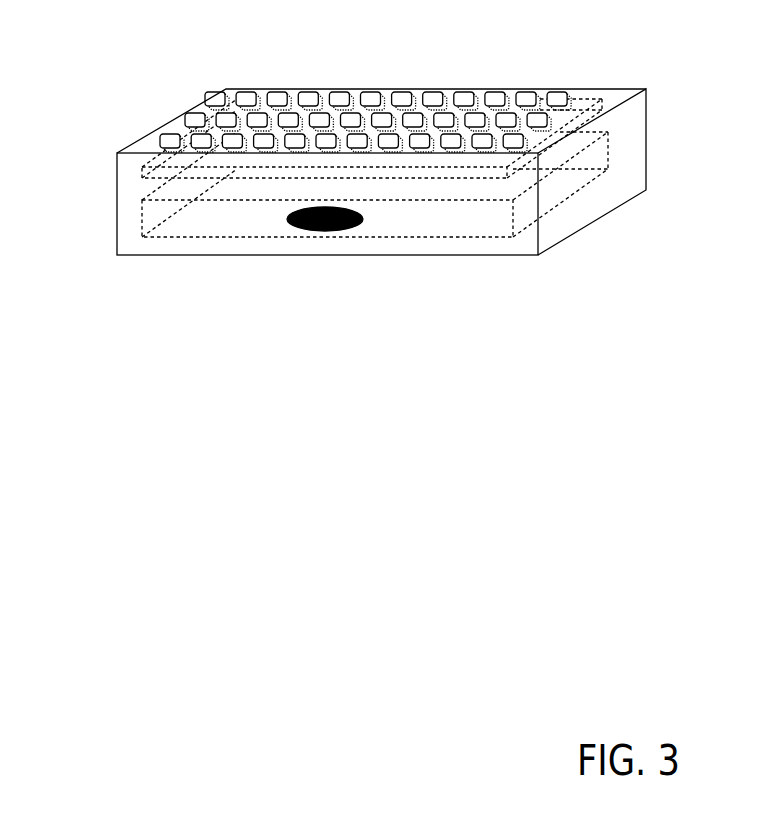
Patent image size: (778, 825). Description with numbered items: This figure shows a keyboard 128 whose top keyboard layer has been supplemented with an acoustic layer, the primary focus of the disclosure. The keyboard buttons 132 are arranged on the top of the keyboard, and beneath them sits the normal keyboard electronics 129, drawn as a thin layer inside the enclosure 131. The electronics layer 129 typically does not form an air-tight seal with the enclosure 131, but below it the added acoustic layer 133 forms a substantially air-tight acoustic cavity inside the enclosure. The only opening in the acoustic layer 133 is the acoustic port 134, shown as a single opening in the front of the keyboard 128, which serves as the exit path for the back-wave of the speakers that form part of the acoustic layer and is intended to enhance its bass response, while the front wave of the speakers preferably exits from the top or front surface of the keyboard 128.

The keyboard 128 is at (380, 242).
The keyboard electronics 129 is at (596, 103).
The enclosure 131 is at (131, 248).
The keyboard buttons 132 is at (432, 100).
The acoustic layer 133 is at (460, 217).
The acoustic port 134 is at (336, 226).